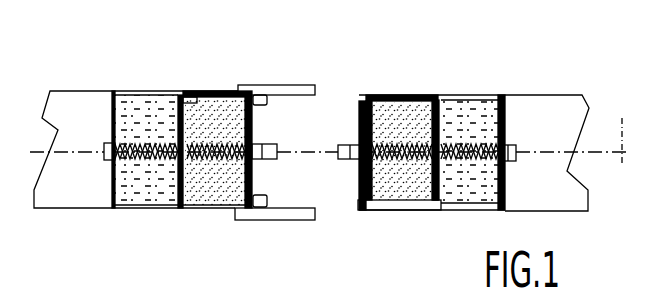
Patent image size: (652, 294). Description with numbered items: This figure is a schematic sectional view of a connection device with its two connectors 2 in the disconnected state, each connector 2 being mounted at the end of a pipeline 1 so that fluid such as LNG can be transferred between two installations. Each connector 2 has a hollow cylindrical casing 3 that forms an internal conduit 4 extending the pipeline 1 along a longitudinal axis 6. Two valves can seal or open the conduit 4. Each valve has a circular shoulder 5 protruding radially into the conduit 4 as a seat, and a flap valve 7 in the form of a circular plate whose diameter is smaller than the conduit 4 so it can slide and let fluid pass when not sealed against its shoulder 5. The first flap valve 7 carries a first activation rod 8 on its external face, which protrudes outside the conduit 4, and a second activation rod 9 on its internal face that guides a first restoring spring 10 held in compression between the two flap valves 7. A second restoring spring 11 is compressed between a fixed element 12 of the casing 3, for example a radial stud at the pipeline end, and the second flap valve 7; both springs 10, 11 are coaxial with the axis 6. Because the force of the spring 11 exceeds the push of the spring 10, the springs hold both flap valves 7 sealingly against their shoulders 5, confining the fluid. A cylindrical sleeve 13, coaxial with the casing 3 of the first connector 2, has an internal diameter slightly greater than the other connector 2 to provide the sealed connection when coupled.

The pipeline 1 is at (72, 110).
The connector 2 is at (205, 84).
The casing 3 is at (180, 207).
The internal conduit 4 is at (133, 188).
The shoulder 5 is at (198, 92).
The longitudinal axis 6 is at (604, 151).
The flap valve 7 is at (173, 178).
The first activation rod 8 is at (268, 143).
The second activation rod 9 is at (218, 136).
The first restoring spring 10 is at (197, 160).
The second restoring spring 11 is at (129, 134).
The fixed element 12 is at (108, 162).
The cylindrical sleeve 13 is at (303, 85).